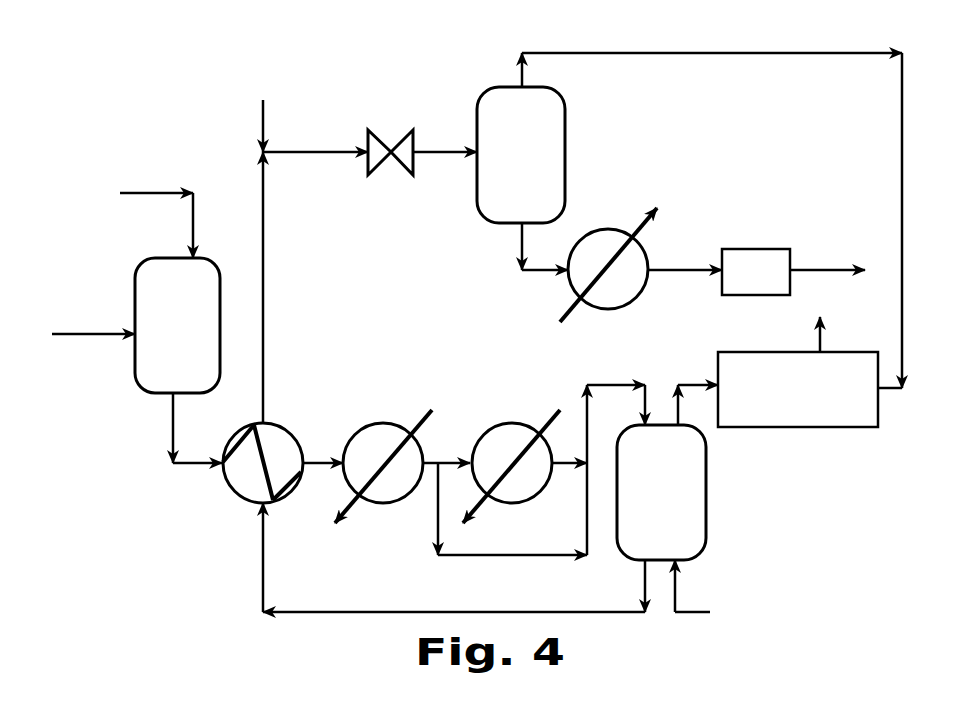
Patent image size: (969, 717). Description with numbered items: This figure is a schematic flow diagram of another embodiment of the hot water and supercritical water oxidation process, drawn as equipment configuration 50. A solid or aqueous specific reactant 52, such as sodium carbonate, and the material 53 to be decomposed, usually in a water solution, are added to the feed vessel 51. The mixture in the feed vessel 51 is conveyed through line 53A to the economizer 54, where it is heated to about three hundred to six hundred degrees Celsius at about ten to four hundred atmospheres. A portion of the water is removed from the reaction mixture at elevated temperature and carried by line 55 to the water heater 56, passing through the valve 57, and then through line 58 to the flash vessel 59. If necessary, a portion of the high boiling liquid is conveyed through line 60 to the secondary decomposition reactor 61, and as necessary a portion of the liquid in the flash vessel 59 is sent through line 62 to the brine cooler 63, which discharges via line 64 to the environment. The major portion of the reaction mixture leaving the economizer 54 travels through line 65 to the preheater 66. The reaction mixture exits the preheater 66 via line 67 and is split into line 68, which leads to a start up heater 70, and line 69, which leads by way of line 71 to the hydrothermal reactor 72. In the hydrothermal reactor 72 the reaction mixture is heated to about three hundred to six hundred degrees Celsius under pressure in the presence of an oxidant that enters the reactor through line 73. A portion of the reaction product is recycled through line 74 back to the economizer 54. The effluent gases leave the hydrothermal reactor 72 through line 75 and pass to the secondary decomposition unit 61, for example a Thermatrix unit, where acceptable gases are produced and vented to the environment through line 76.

The equipment configuration 50 is at (205, 535).
The feed vessel 51 is at (136, 268).
The specific reactant 52 is at (193, 232).
The material to be decomposed 53 is at (80, 334).
The line 53A is at (190, 466).
The economizer 54 is at (282, 426).
The line 55 is at (265, 268).
The water heater 56 is at (490, 90).
The valve 57 is at (395, 140).
The line 58 is at (519, 241).
The flash vessel 59 is at (575, 285).
The line 60 is at (662, 52).
The secondary decomposition reactor 61 is at (812, 428).
The line 62 is at (690, 276).
The brine cooler 63 is at (745, 249).
The line 64 is at (841, 272).
The line 65 is at (333, 450).
The preheater 66 is at (390, 425).
The line 67 is at (430, 470).
The line 68 is at (447, 460).
The line 69 is at (518, 560).
The start up heater 70 is at (520, 425).
The line 71 is at (616, 383).
The hydrothermal reactor 72 is at (706, 517).
The line 73 is at (680, 605).
The line 74 is at (520, 610).
The line 75 is at (694, 383).
The line 76 is at (816, 336).